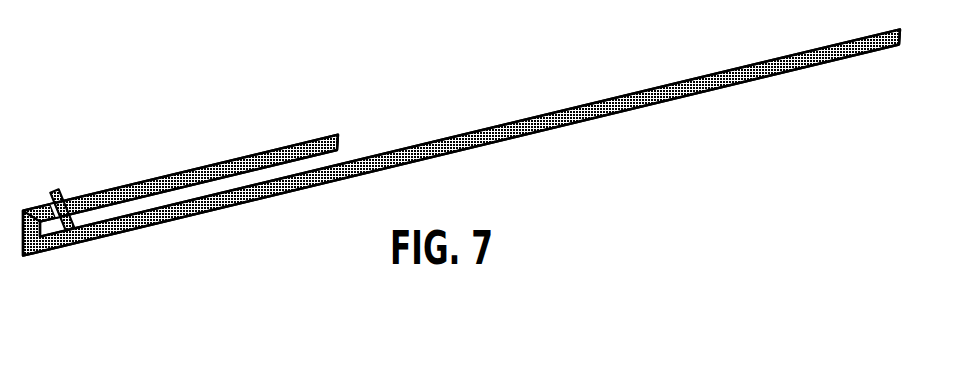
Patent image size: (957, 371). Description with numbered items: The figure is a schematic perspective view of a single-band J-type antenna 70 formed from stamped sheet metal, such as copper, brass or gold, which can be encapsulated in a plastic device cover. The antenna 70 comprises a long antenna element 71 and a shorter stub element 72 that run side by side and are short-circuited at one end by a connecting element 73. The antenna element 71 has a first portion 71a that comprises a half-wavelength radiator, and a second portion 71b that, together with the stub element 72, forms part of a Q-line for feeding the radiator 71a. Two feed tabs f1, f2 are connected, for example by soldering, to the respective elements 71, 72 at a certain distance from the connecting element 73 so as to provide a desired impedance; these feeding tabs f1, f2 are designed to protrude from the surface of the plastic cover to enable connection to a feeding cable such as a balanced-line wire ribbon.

The stamped-metal antenna 70 is at (455, 189).
The antenna element 71 is at (461, 142).
The first portion 71a is at (473, 147).
The second portion 71b is at (203, 213).
The stub element 72 is at (210, 168).
The connecting element 73 is at (22, 240).
The feed tab f1 is at (60, 236).
The feed tab f2 is at (56, 189).